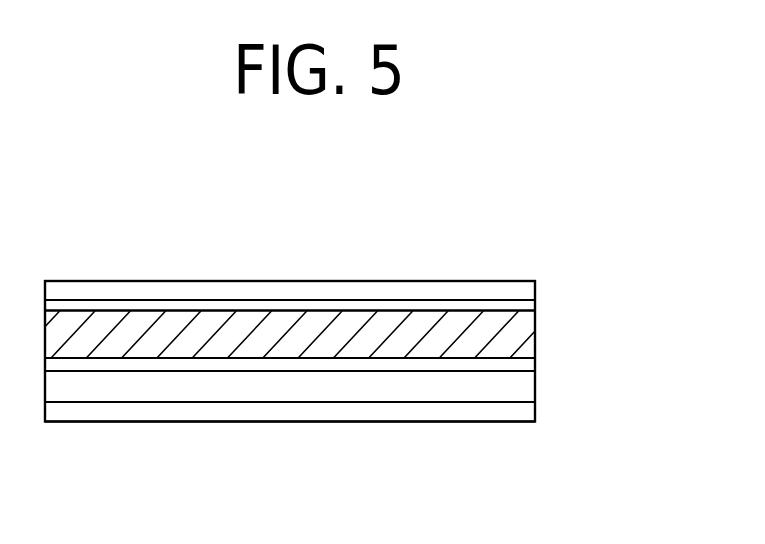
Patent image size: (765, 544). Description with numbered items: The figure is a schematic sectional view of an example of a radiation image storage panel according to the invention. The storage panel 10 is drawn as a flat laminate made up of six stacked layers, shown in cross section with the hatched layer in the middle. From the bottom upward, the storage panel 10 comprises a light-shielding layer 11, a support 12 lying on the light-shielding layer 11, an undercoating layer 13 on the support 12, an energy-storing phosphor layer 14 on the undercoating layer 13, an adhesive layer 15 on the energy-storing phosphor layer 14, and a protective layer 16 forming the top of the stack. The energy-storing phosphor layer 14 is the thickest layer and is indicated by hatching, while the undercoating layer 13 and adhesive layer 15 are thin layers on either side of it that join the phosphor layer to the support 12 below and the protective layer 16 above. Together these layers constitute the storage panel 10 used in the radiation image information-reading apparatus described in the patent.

The storage panel 10 is at (512, 260).
The light-shielding layer 11 is at (528, 412).
The support 12 is at (527, 387).
The undercoating layer 13 is at (528, 365).
The energy-storing phosphor layer 14 is at (525, 337).
The adhesive layer 15 is at (525, 308).
The protective layer 16 is at (523, 290).